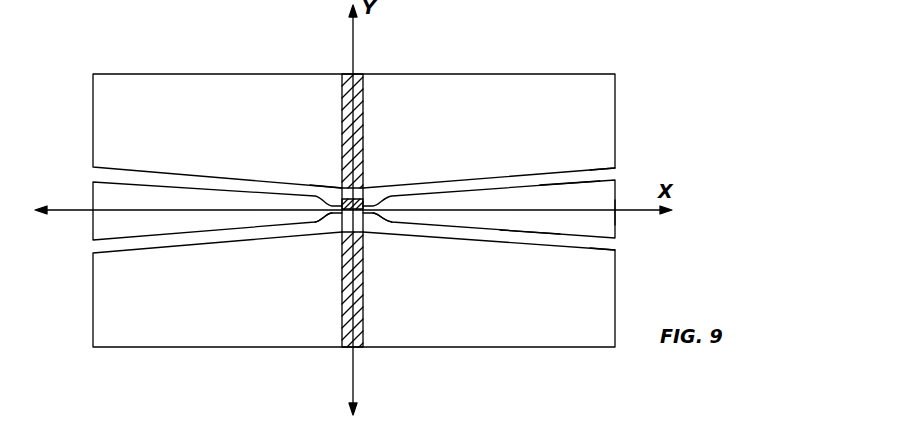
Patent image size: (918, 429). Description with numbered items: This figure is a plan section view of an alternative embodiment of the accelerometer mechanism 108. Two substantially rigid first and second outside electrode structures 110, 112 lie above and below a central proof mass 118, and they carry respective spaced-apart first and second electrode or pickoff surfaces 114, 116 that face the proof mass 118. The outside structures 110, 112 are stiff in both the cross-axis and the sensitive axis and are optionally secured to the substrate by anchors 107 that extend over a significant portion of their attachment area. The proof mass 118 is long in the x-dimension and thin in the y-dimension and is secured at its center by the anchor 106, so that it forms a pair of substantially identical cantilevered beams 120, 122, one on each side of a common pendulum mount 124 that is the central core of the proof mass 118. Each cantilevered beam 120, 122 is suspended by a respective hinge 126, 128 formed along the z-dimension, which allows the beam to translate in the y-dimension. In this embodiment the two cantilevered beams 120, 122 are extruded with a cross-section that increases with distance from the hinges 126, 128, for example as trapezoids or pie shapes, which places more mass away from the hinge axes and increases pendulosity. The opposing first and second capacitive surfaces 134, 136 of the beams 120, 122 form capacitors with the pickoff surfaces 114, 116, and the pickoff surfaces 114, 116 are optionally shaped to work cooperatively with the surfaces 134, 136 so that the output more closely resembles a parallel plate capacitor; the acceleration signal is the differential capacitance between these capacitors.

The anchor 106 is at (334, 216).
The anchors 107 is at (366, 100).
The accelerometer mechanism 108 is at (695, 152).
The first outside electrode structure 110 is at (521, 96).
The second outside electrode structure 112 is at (468, 316).
The first pickoff surface 114 is at (606, 172).
The second pickoff surface 116 is at (607, 246).
The proof mass 118 is at (645, 235).
The first cantilevered beam 120 is at (617, 215).
The second cantilevered beam 122 is at (93, 209).
The common pendulum mount 124 is at (334, 185).
The first hinge 126 is at (372, 216).
The second hinge 128 is at (326, 216).
The first capacitive surface 134 is at (570, 182).
The second capacitive surface 136 is at (533, 233).